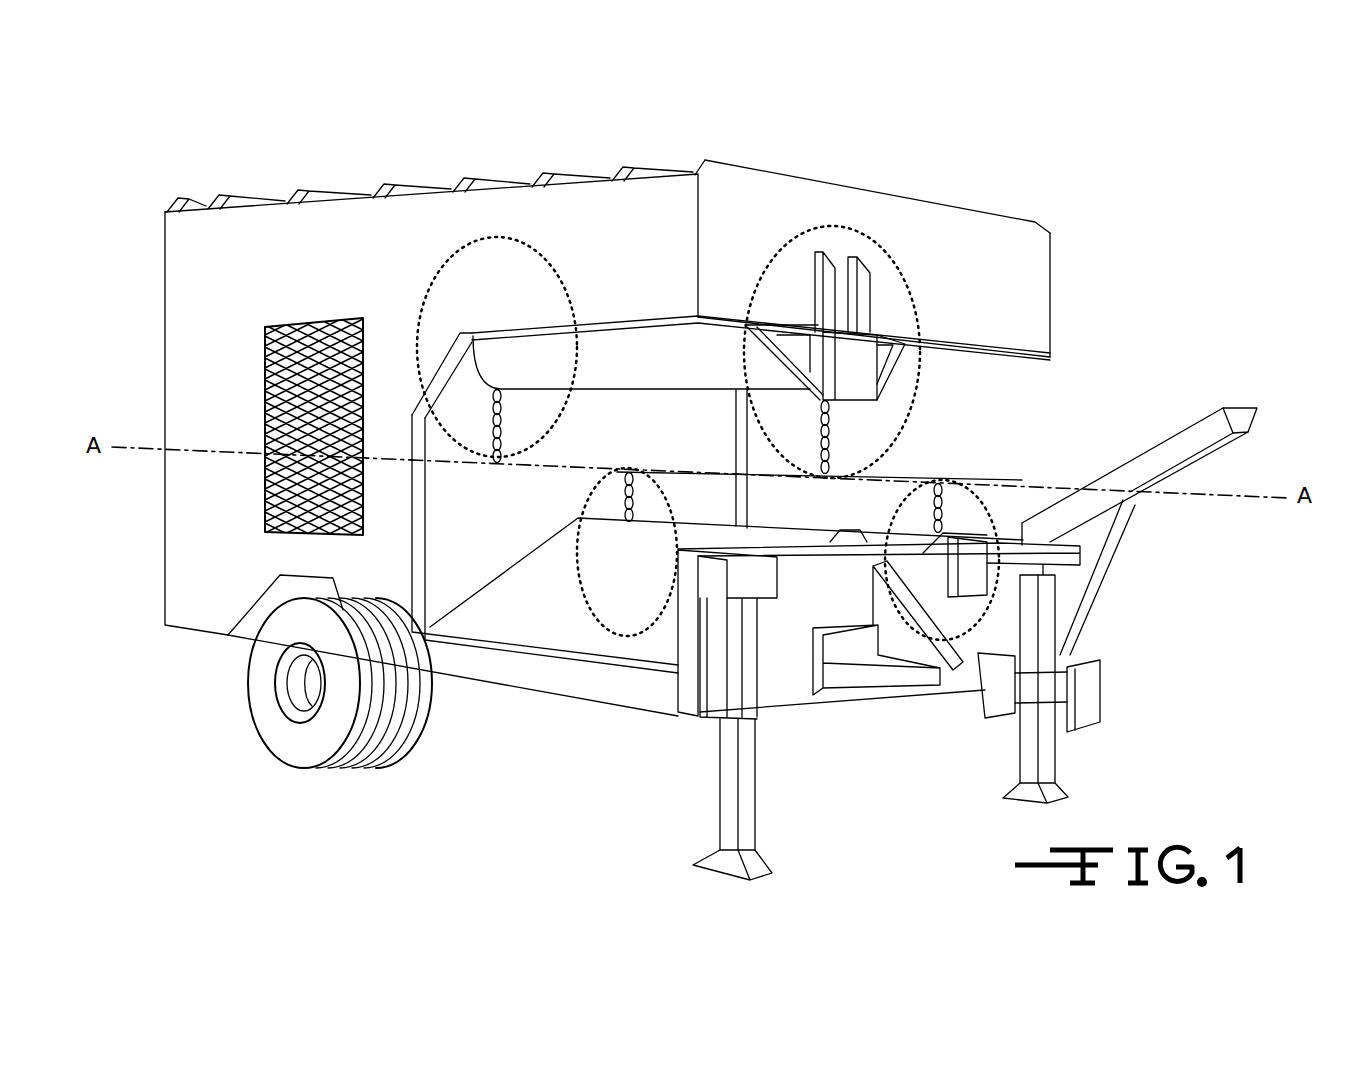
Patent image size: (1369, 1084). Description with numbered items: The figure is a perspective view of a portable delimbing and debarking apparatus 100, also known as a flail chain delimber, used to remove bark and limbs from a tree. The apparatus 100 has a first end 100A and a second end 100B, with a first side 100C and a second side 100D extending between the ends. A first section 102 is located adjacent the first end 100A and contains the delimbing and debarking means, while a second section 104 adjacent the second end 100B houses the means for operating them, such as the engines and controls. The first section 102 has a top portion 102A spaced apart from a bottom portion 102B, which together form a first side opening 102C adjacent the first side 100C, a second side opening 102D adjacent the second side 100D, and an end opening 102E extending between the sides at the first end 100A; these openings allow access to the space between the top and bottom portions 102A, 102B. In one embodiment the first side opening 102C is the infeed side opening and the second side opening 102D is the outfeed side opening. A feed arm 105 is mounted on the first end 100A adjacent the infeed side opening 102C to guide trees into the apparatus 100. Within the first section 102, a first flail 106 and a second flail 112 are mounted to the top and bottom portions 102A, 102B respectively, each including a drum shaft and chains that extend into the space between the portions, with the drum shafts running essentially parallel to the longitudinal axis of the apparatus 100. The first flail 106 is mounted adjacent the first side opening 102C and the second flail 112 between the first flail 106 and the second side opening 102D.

The delimbing and debarking apparatus 100 is at (463, 157).
The first end 100A is at (1027, 273).
The second end 100B is at (208, 405).
The first side 100C is at (1052, 320).
The second side 100D is at (540, 670).
The first section 102 is at (788, 203).
The top portion 102A is at (962, 251).
The bottom portion 102B is at (785, 703).
The first side opening 102C is at (1003, 418).
The second side opening 102D is at (518, 510).
The end opening 102E is at (937, 385).
The second section 104 is at (240, 260).
The feed arm 105 is at (1217, 452).
The first flail 106 is at (953, 495).
The second flail 112 is at (830, 437).